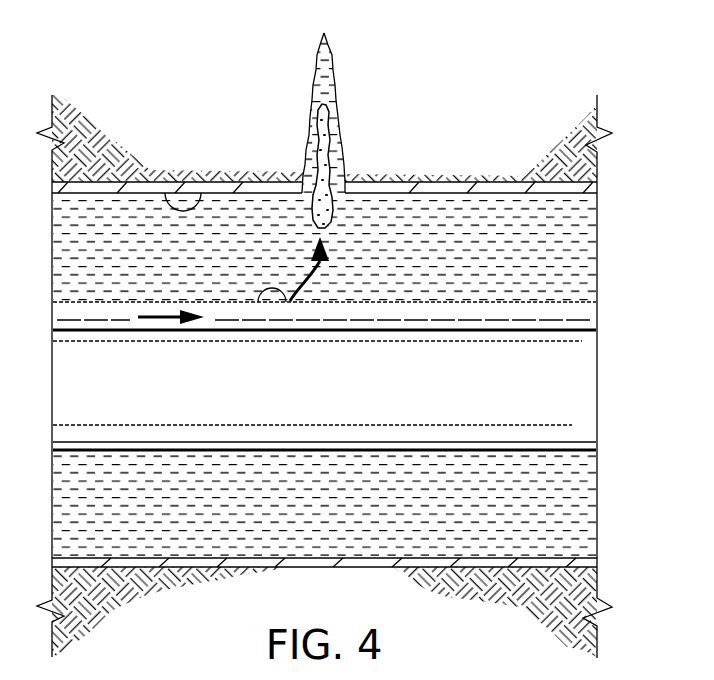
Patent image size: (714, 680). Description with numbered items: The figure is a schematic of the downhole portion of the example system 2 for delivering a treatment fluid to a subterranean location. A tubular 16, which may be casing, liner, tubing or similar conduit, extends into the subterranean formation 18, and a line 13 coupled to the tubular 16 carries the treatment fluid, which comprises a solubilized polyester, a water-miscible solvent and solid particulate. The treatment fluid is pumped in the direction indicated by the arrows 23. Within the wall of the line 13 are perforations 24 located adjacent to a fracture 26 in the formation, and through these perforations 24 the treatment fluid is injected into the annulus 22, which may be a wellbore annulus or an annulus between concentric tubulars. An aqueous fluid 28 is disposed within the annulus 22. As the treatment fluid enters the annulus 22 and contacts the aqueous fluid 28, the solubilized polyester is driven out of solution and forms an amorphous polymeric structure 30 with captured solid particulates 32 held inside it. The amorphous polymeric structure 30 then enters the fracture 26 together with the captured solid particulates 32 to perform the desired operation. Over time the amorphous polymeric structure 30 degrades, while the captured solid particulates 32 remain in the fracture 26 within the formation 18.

The system 2 is at (324, 329).
The line 13 is at (411, 310).
The tubular 16 is at (325, 445).
The subterranean formation 18 is at (512, 157).
The annulus 22 is at (194, 193).
The arrows 23 is at (163, 313).
The perforations 24 is at (258, 302).
The fracture 26 is at (336, 83).
The aqueous fluid 28 is at (440, 202).
The amorphous polymeric structure 30 is at (311, 118).
The captured solid particulates 32 is at (330, 153).